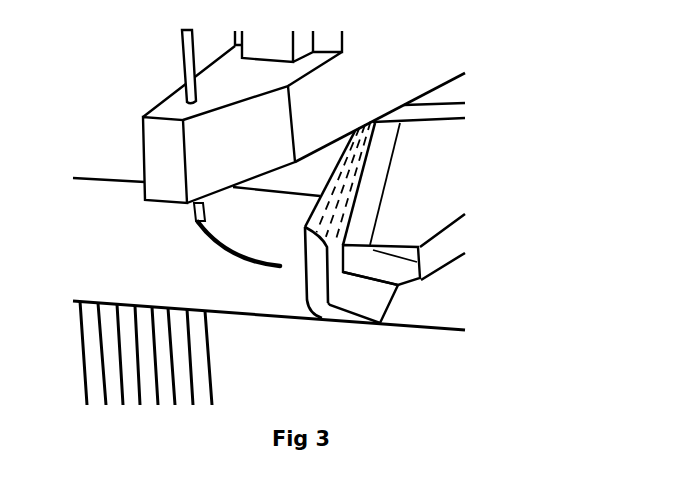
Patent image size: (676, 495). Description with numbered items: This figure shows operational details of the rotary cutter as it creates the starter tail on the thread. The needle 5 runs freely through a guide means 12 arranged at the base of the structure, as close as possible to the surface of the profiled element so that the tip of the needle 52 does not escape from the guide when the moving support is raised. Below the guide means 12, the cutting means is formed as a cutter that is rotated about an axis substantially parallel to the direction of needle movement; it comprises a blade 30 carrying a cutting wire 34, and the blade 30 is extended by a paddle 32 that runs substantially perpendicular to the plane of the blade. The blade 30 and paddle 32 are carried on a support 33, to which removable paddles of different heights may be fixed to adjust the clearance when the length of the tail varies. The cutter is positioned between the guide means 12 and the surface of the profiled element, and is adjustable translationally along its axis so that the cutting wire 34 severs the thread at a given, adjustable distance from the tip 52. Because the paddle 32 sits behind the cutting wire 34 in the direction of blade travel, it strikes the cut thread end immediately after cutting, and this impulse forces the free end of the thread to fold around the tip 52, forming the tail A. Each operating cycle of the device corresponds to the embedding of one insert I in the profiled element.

The needle 5 is at (180, 43).
The guide means 12 is at (152, 137).
The tip of the needle 52 is at (193, 222).
The tail A is at (227, 252).
The insert I is at (82, 343).
The support of the blade 33 is at (393, 155).
The paddle 32 is at (330, 220).
The cutting wire 34 is at (397, 297).
The blade 30 is at (377, 300).